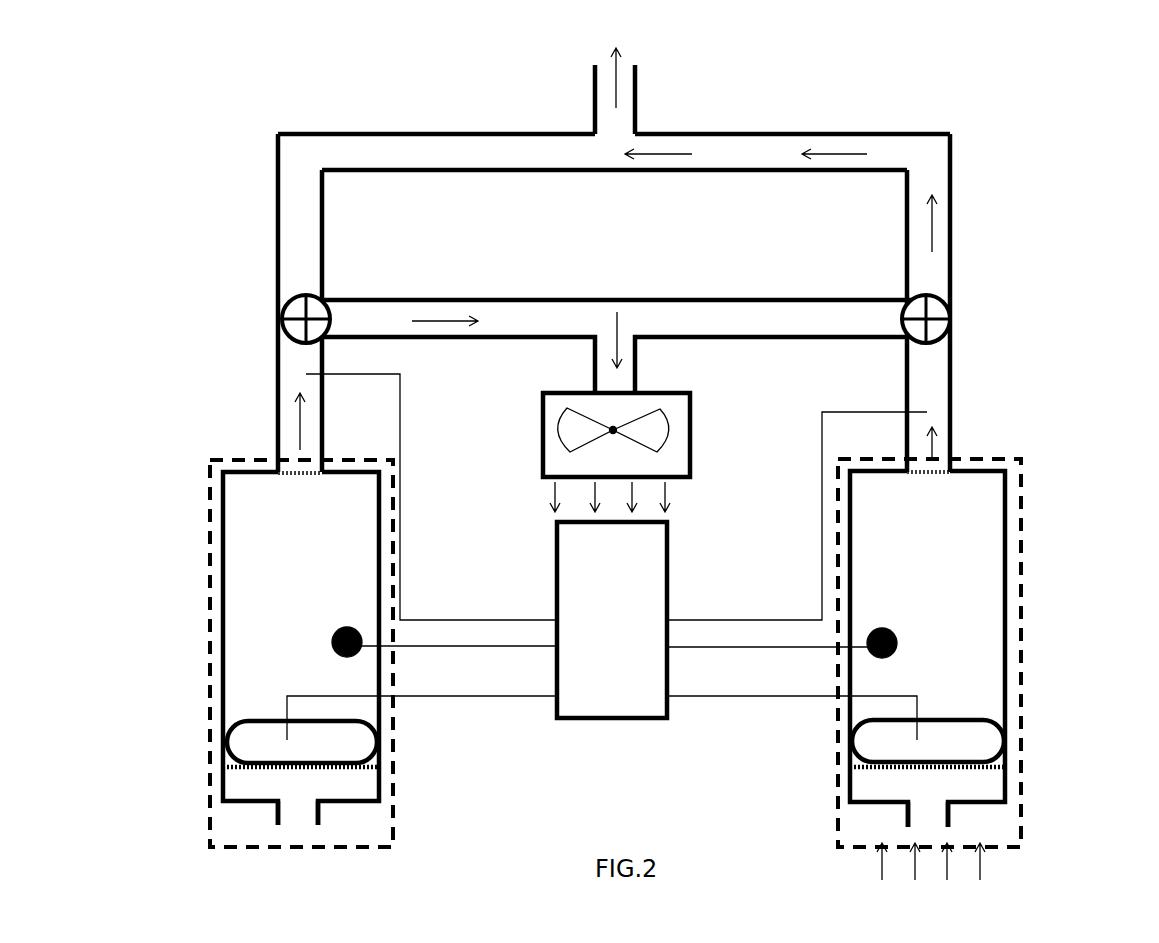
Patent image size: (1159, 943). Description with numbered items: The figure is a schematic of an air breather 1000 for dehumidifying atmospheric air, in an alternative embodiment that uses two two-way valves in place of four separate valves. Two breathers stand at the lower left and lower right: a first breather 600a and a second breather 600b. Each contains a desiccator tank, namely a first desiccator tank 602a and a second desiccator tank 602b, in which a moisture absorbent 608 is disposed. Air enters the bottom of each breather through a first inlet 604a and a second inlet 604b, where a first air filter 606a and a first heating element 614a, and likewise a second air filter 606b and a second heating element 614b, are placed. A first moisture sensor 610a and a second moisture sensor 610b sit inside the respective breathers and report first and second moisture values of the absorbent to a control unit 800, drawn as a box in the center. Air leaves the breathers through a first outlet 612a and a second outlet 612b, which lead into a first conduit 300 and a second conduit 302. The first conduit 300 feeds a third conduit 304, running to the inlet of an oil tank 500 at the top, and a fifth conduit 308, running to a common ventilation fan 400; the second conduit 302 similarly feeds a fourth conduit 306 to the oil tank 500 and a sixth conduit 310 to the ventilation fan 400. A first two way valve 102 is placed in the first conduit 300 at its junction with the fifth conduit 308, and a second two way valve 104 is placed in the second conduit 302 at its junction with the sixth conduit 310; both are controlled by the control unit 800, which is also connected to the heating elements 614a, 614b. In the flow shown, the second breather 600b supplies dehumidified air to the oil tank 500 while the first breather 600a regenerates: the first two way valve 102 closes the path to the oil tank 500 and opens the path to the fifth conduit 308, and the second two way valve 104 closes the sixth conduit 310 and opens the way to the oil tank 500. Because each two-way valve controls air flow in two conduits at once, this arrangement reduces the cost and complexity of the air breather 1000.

The air breather 1000 is at (1019, 103).
The first conduit 300 is at (277, 268).
The second conduit 302 is at (953, 280).
The third conduit 304 is at (483, 153).
The fourth conduit 306 is at (733, 147).
The fifth conduit 308 is at (438, 298).
The sixth conduit 310 is at (790, 297).
The oil tank 500 is at (638, 83).
The first two way valve 102 is at (333, 320).
The second two way valve 104 is at (902, 322).
The ventilation fan 400 is at (538, 437).
The control unit 800 is at (608, 722).
The first breather 600a is at (210, 562).
The second breather 600b is at (1020, 541).
The first desiccator tank 602a is at (223, 507).
The second desiccator tank 602b is at (1004, 475).
The first inlet 604a is at (276, 822).
The second inlet 604b is at (948, 822).
The first air filter 606a is at (250, 787).
The second air filter 606b is at (932, 792).
The moisture absorbent 608 is at (247, 563).
The first moisture sensor 610a is at (335, 634).
The second moisture sensor 610b is at (897, 642).
The first outlet 612a is at (300, 468).
The second outlet 612b is at (953, 470).
The first heating element 614a is at (243, 720).
The second heating element 614b is at (990, 720).